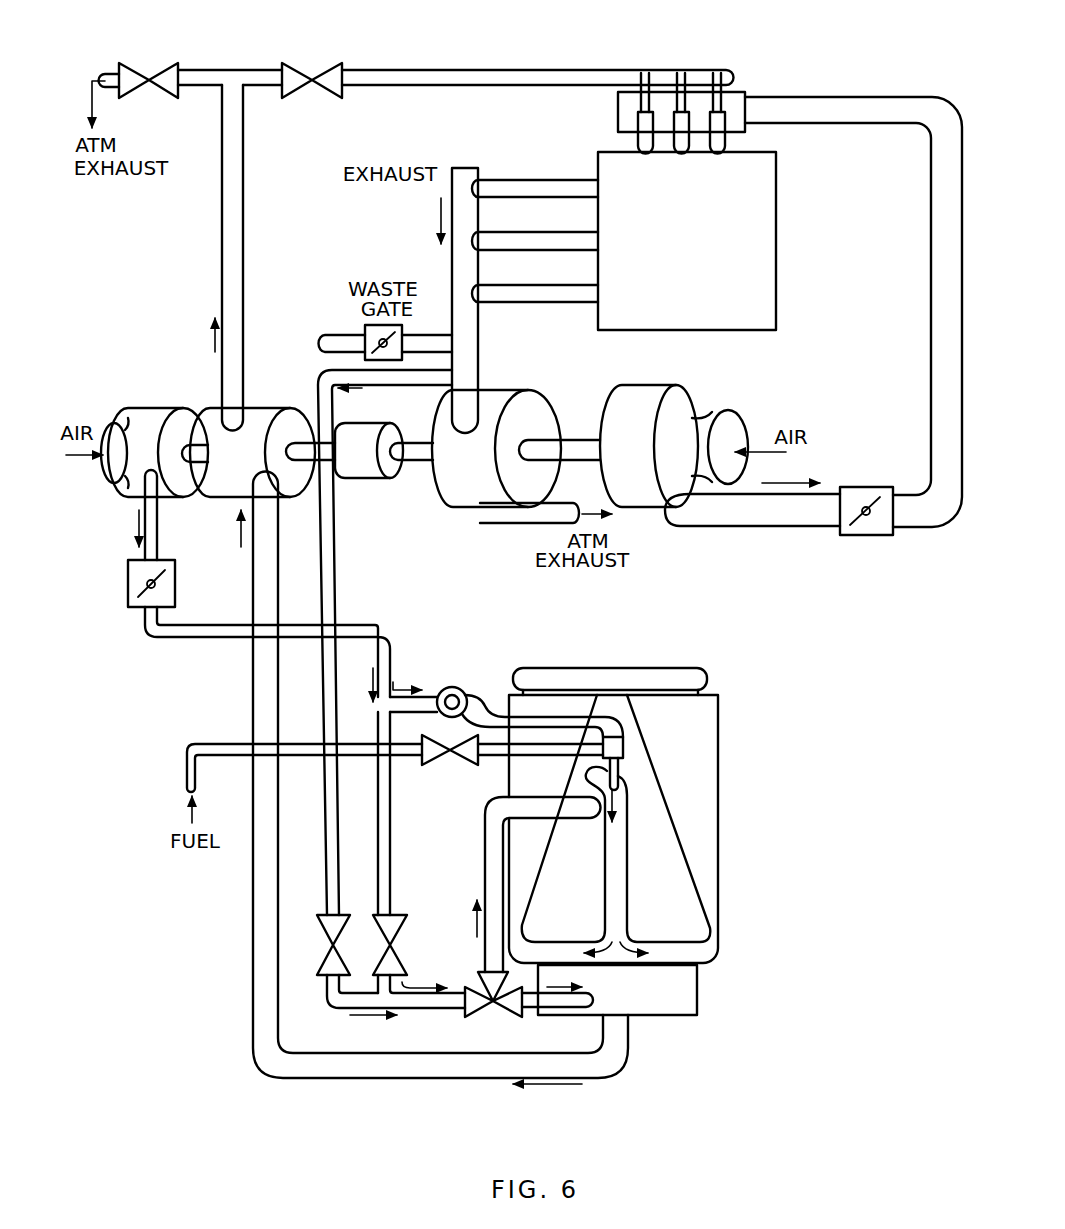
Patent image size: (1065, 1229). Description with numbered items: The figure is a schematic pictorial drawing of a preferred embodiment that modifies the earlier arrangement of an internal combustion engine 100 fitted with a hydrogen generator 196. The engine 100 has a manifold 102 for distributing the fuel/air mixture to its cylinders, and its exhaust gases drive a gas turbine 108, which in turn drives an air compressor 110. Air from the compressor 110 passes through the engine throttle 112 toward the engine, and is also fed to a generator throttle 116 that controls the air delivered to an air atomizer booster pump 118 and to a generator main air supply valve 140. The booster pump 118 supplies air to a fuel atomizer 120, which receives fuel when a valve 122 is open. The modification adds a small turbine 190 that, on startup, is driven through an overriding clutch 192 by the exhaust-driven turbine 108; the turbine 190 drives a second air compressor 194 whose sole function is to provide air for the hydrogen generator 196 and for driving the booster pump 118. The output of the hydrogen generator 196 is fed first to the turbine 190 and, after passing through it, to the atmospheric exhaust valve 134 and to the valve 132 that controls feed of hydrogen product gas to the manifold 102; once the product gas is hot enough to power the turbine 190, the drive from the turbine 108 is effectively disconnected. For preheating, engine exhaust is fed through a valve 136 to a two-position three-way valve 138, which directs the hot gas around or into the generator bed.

The internal combustion engine 100 is at (776, 188).
The manifold 102 is at (618, 113).
The gas turbine 108 is at (505, 390).
The air compressor 110 is at (672, 390).
The engine throttle 112 is at (862, 487).
The generator throttle 116 is at (128, 590).
The air atomizer booster pump 118 is at (452, 687).
The fuel atomizer 120 is at (625, 740).
The valve 122 is at (463, 765).
The valve 132 is at (335, 63).
The atmospheric exhaust valve 134 is at (171, 63).
The valve 136 is at (322, 915).
The three-way valve 138 is at (496, 1012).
The generator main air supply valve 140 is at (398, 915).
The small turbine 190 is at (290, 408).
The overriding clutch 192 is at (362, 426).
The air compressor 194 is at (172, 408).
The hydrogen generator 196 is at (688, 668).